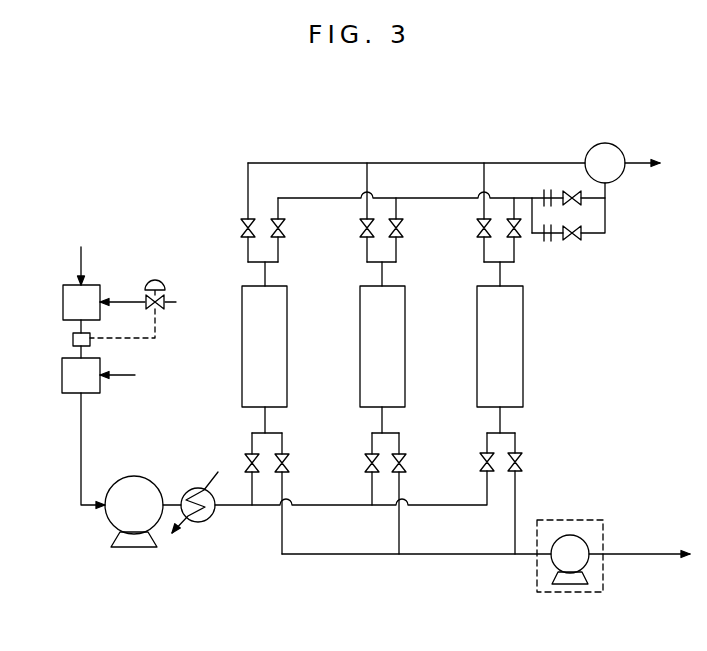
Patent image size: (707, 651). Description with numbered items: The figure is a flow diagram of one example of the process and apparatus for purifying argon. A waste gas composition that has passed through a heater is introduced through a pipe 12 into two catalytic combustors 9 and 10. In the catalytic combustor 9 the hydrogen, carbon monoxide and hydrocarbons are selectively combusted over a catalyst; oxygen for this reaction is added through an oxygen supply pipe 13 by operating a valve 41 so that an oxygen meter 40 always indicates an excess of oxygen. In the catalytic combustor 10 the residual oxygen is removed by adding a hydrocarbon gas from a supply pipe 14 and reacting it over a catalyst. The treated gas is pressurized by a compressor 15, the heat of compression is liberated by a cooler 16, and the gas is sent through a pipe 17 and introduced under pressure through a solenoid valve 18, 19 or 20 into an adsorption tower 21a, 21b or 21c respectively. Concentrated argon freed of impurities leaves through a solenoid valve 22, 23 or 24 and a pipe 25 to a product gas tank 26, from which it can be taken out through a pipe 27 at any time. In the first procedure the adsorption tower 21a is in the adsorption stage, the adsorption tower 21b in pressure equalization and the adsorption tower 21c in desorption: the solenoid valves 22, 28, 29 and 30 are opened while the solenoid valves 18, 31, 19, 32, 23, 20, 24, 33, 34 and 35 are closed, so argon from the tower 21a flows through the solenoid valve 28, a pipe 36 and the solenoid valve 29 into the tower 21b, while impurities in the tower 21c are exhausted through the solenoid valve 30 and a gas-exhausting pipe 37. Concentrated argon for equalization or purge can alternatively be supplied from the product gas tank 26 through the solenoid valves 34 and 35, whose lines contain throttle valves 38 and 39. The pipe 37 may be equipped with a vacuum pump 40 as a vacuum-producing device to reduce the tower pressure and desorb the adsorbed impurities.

The catalytic combustor 9 is at (88, 285).
The catalytic combustor 10 is at (85, 393).
The pipe 12 is at (86, 249).
The oxygen supply pipe 13 is at (125, 302).
The supply pipe 14 is at (137, 376).
The compressor 15 is at (125, 481).
The cooler 16 is at (190, 492).
The pipe 17 is at (233, 508).
The solenoid valve 18 is at (246, 462).
The solenoid valve 19 is at (366, 461).
The solenoid valve 20 is at (481, 460).
The adsorption tower 21a is at (242, 357).
The adsorption tower 21b is at (360, 357).
The adsorption tower 21c is at (477, 357).
The solenoid valve 22 is at (241, 228).
The solenoid valve 23 is at (360, 230).
The solenoid valve 24 is at (477, 229).
The pipe 25 is at (345, 163).
The product gas tank 26 is at (605, 143).
The pipe 27 is at (640, 163).
The solenoid valve 28 is at (285, 228).
The solenoid valve 29 is at (403, 228).
The solenoid valve 30 is at (520, 465).
The solenoid valve 31 is at (288, 465).
The solenoid valve 32 is at (405, 465).
The solenoid valve 33 is at (519, 237).
The solenoid valve 34 is at (571, 190).
The solenoid valve 35 is at (575, 241).
The pipe 36 is at (456, 198).
The gas-exhausting pipe 37 is at (646, 554).
The throttle valve 38 is at (543, 189).
The throttle valve 39 is at (548, 242).
The oxygen meter 40 is at (73, 340).
The valve 41 is at (160, 281).